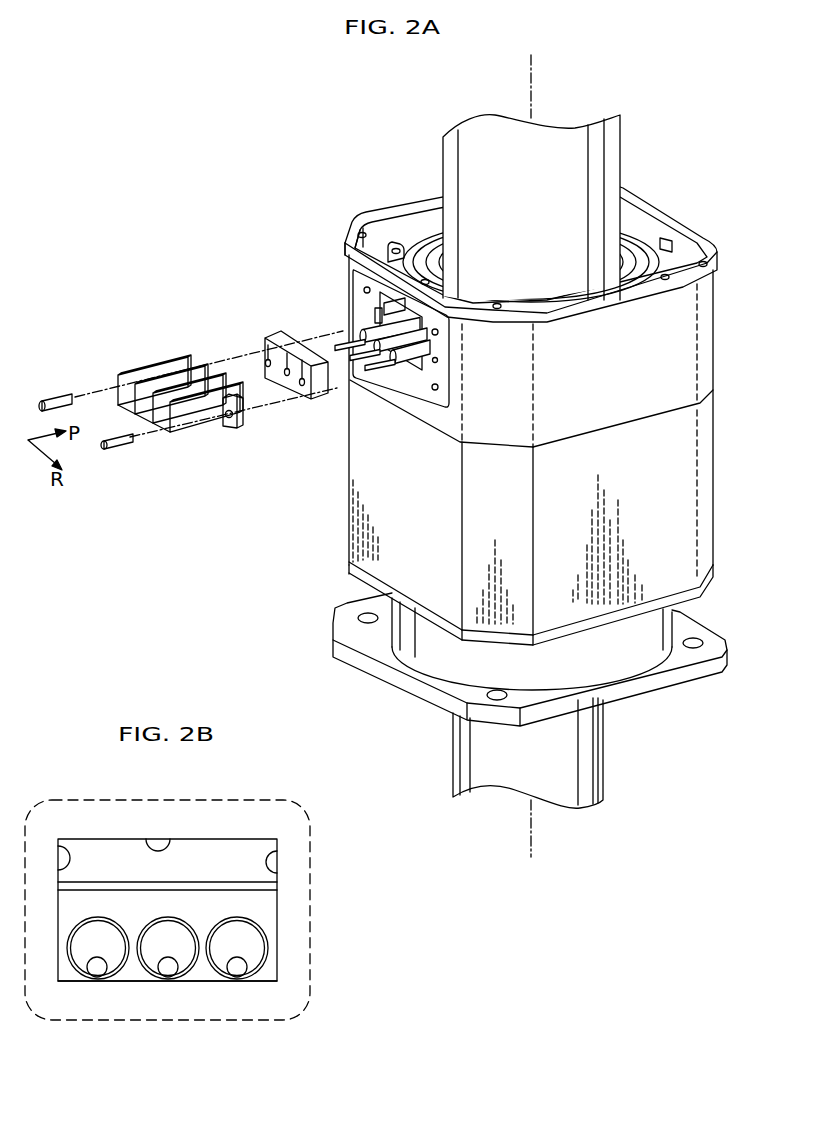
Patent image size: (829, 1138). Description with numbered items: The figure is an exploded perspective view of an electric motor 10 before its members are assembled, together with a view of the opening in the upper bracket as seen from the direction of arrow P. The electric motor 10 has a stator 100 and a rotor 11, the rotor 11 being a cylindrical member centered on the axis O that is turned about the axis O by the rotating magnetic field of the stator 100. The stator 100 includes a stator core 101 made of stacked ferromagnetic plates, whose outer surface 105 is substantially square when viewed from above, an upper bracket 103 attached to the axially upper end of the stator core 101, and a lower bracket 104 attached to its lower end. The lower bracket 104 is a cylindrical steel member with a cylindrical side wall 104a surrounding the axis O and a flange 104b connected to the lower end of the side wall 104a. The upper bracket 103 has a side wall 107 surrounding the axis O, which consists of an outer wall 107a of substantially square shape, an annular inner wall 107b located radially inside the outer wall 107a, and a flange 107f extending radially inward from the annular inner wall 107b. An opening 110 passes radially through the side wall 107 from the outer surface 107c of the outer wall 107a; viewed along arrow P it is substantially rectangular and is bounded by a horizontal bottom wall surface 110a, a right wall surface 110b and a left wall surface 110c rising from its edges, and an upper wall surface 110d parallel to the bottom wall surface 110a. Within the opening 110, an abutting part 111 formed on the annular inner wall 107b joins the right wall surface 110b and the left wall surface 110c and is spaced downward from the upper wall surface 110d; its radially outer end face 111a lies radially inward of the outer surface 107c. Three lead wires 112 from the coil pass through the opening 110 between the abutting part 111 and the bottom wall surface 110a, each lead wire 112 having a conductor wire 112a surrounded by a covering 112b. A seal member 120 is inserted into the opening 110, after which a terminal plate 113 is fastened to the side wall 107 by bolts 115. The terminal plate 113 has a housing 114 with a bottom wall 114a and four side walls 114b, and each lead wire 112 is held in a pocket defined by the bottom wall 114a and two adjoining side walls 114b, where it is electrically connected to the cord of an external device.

In FIG. 2A, the electric motor 10 is at (315, 103).
In FIG. 2A, the stator 100 is at (348, 190).
In FIG. 2A, the rotor 11 is at (450, 173).
In FIG. 2A, the axis O is at (531, 64).
In FIG. 2A, the stator core 101 is at (342, 522).
In FIG. 2A, the upper bracket 103 is at (519, 397).
In FIG. 2A, the lower bracket 104 is at (508, 646).
In FIG. 2A, the cylindrical side wall 104a is at (340, 618).
In FIG. 2A, the flange 104b is at (387, 666).
In FIG. 2A, the outer surface 105 is at (350, 474).
In FIG. 2A, the side wall 107 is at (555, 215).
In FIG. 2A, the outer wall 107a is at (684, 228).
In FIG. 2A, the annular inner wall 107b is at (650, 242).
In FIG. 2A, the flange 107f is at (545, 223).
In FIG. 2A, the outer surface 107c is at (368, 276).
In FIG. 2A, the opening 110 is at (372, 299).
In FIG. 2B, the opening 110 is at (114, 852).
In FIG. 2B, the bottom wall surface 110a is at (270, 970).
In FIG. 2B, the right wall surface 110b is at (267, 860).
In FIG. 2B, the left wall surface 110c is at (60, 858).
In FIG. 2B, the upper wall surface 110d is at (152, 846).
In FIG. 2A, the abutting part 111 is at (385, 307).
In FIG. 2B, the abutting part 111 is at (208, 881).
In FIG. 2B, the radially outer end face 111a is at (245, 889).
In FIG. 2A, the lead wires 112 is at (345, 331).
In FIG. 2B, the lead wires 112 is at (164, 1008).
In FIG. 2B, the conductor wire 112a is at (95, 975).
In FIG. 2B, the covering 112b is at (120, 968).
In FIG. 2A, the terminal plate 113 is at (134, 344).
In FIG. 2A, the housing 114 is at (182, 461).
In FIG. 2A, the bottom wall 114a is at (225, 500).
In FIG. 2A, the side walls 114b is at (193, 416).
In FIG. 2A, the bolts 115 is at (55, 396).
In FIG. 2A, the seal member 120 is at (260, 332).